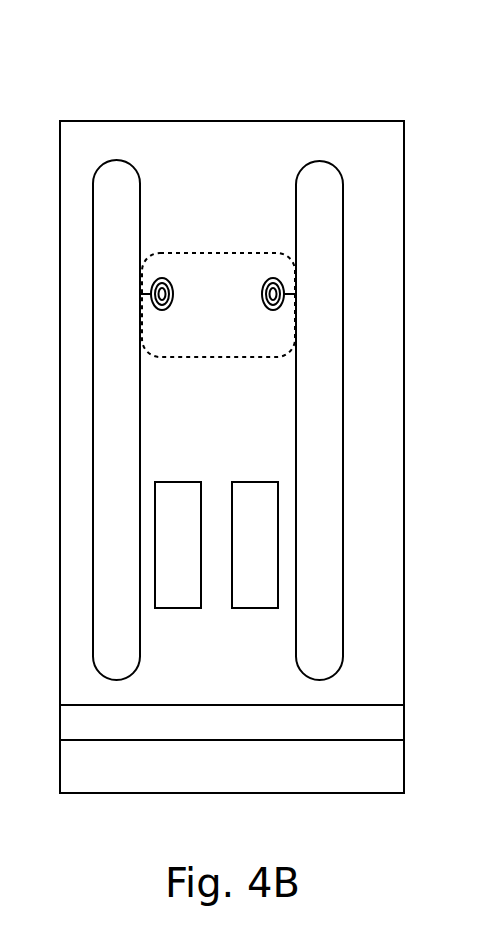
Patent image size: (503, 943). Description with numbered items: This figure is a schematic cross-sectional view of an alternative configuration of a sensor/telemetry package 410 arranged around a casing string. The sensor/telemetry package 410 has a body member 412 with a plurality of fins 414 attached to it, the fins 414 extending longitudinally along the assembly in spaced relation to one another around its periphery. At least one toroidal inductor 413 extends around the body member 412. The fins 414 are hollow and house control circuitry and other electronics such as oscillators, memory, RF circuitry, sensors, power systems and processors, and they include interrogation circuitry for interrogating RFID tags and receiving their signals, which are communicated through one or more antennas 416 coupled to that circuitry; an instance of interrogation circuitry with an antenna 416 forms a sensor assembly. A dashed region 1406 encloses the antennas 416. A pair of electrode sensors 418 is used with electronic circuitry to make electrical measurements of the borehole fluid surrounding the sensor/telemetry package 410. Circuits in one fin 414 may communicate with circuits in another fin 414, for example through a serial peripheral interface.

The sensor/telemetry package 410 is at (395, 70).
The body member 412 is at (60, 140).
The toroidal inductor 413 is at (180, 705).
The fins 414 is at (93, 263).
The antennas 416 is at (171, 283).
The electrode sensors 418 is at (155, 547).
The connector region (dashed) 1406 is at (200, 360).